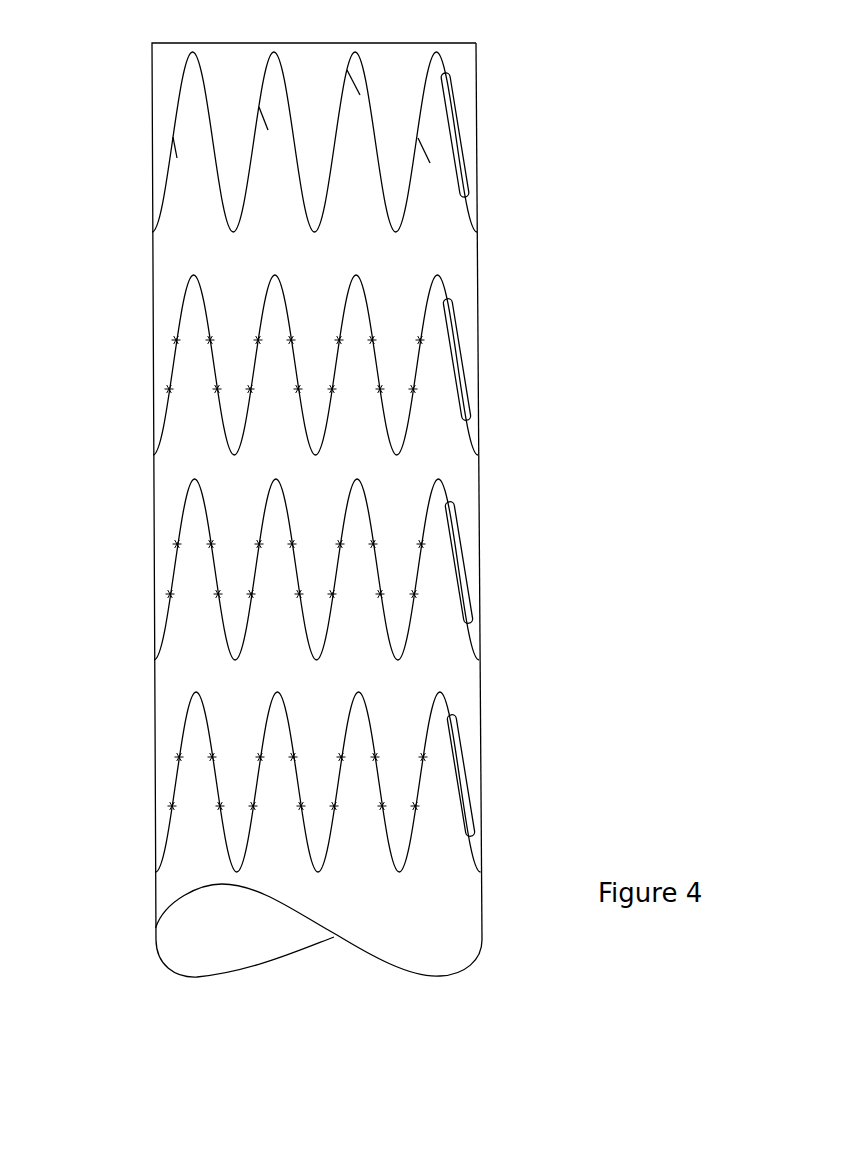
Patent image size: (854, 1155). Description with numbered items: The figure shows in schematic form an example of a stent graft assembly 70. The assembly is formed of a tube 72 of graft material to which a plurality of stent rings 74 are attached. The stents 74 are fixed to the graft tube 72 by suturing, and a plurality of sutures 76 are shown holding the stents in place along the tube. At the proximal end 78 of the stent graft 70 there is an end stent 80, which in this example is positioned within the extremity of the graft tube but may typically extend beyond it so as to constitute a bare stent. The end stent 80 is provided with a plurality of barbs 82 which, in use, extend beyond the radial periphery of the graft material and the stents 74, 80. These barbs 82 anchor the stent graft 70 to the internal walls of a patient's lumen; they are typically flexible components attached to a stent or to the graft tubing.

The stent graft assembly 70 is at (500, 290).
The tube of graft material 72 is at (463, 467).
The stent rings 74 is at (173, 360).
The sutures 76 is at (170, 390).
The proximal end 78 is at (128, 120).
The end stent 80 is at (462, 123).
The barbs 82 is at (177, 157).